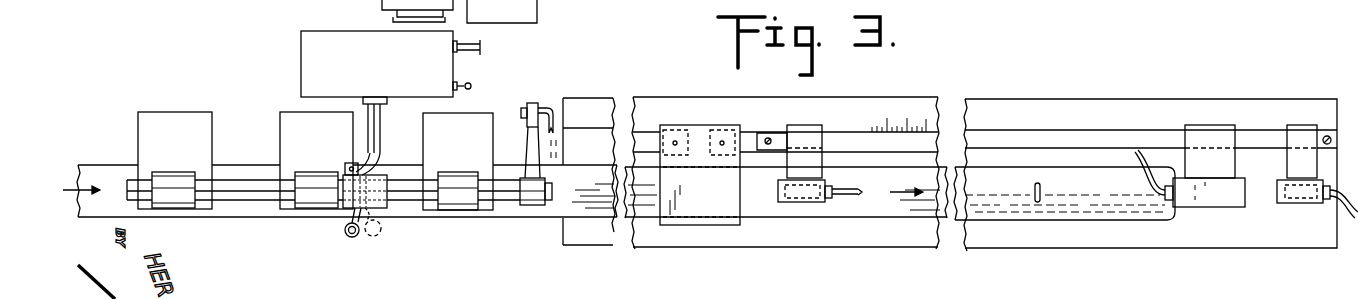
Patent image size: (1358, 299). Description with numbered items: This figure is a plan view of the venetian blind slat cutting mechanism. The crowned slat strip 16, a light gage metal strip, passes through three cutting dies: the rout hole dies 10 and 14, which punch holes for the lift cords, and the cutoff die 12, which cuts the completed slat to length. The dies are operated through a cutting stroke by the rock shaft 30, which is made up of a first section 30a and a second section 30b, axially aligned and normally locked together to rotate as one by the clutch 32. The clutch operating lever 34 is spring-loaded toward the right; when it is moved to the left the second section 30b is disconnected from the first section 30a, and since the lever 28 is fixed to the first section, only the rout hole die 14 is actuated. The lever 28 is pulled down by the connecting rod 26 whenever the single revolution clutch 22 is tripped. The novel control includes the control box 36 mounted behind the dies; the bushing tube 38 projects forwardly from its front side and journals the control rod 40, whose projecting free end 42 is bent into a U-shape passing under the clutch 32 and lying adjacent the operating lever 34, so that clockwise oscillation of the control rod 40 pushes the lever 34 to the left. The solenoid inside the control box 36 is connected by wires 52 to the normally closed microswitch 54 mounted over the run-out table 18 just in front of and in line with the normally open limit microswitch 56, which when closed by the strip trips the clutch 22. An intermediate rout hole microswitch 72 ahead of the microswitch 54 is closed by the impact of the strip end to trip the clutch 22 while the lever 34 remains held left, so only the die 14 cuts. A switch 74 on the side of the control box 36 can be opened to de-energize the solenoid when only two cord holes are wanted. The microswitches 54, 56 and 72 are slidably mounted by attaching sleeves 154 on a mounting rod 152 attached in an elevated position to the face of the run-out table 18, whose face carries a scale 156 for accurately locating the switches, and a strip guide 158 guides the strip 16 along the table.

The cutting die 10 is at (173, 205).
The cutoff die 12 is at (312, 205).
The rout hole die 14 is at (455, 203).
The crowned slat strip 16 is at (248, 208).
The run-out table 18 is at (1063, 230).
The single revolution clutch 22 is at (520, 0).
The connecting rod 26 is at (552, 112).
The lever 28 is at (530, 140).
The rock shaft 30 is at (130, 175).
The first section of the rock shaft 30a is at (412, 185).
The second section of the rock shaft 30b is at (232, 180).
The clutch 32 is at (348, 180).
The clutch operating lever 34 is at (348, 238).
The control box 36 is at (389, 70).
The bushing tube 38 is at (381, 118).
The control rod 40 is at (378, 167).
The projecting free end of the control rod 42 is at (371, 224).
The wires 52 is at (482, 52).
The normally closed microswitch 54 is at (1208, 195).
The limit microswitch 56 is at (1297, 205).
The intermediate rout hole microswitch 72 is at (803, 205).
The switch 74 is at (471, 86).
The mounting rod 152 is at (1067, 140).
The attaching sleeve 154 is at (1212, 130).
The scale 156 is at (917, 112).
The strip guide 158 is at (700, 175).